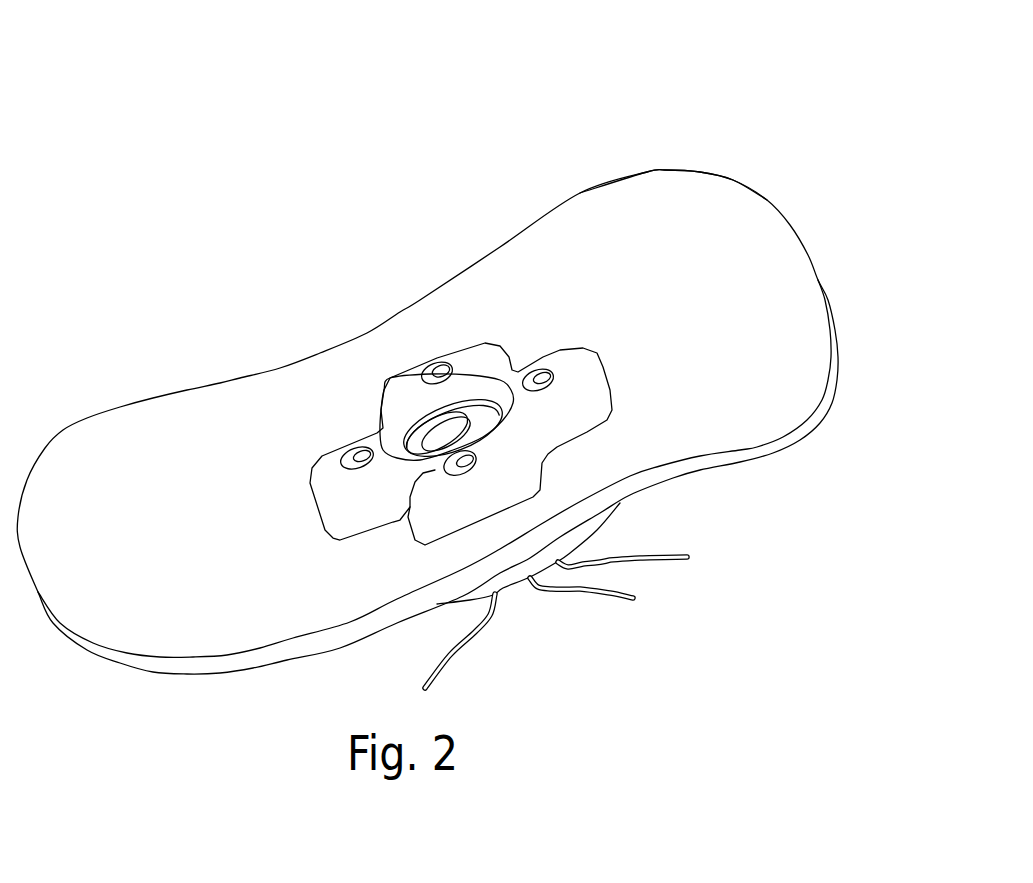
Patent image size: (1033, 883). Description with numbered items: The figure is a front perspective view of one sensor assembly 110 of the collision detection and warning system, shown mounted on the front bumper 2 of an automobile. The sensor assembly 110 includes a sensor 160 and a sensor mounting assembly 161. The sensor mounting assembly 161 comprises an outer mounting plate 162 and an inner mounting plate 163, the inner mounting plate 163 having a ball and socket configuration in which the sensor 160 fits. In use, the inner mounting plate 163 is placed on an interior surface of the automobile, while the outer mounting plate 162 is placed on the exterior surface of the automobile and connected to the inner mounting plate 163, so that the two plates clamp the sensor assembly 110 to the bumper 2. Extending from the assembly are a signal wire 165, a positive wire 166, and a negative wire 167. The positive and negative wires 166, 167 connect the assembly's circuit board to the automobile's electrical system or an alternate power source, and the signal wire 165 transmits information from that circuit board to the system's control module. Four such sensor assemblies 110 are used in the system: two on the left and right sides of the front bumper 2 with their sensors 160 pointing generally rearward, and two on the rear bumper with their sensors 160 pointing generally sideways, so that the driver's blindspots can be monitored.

The sensor assembly 110 is at (262, 95).
The front bumper 2 is at (665, 170).
The sensor 160 is at (420, 437).
The sensor mounting assembly 161 is at (132, 321).
The outer mounting plate 162 is at (490, 344).
The inner mounting plate 163 is at (605, 527).
The signal wire 165 is at (458, 647).
The positive wire 166 is at (610, 597).
The negative wire 167 is at (667, 562).